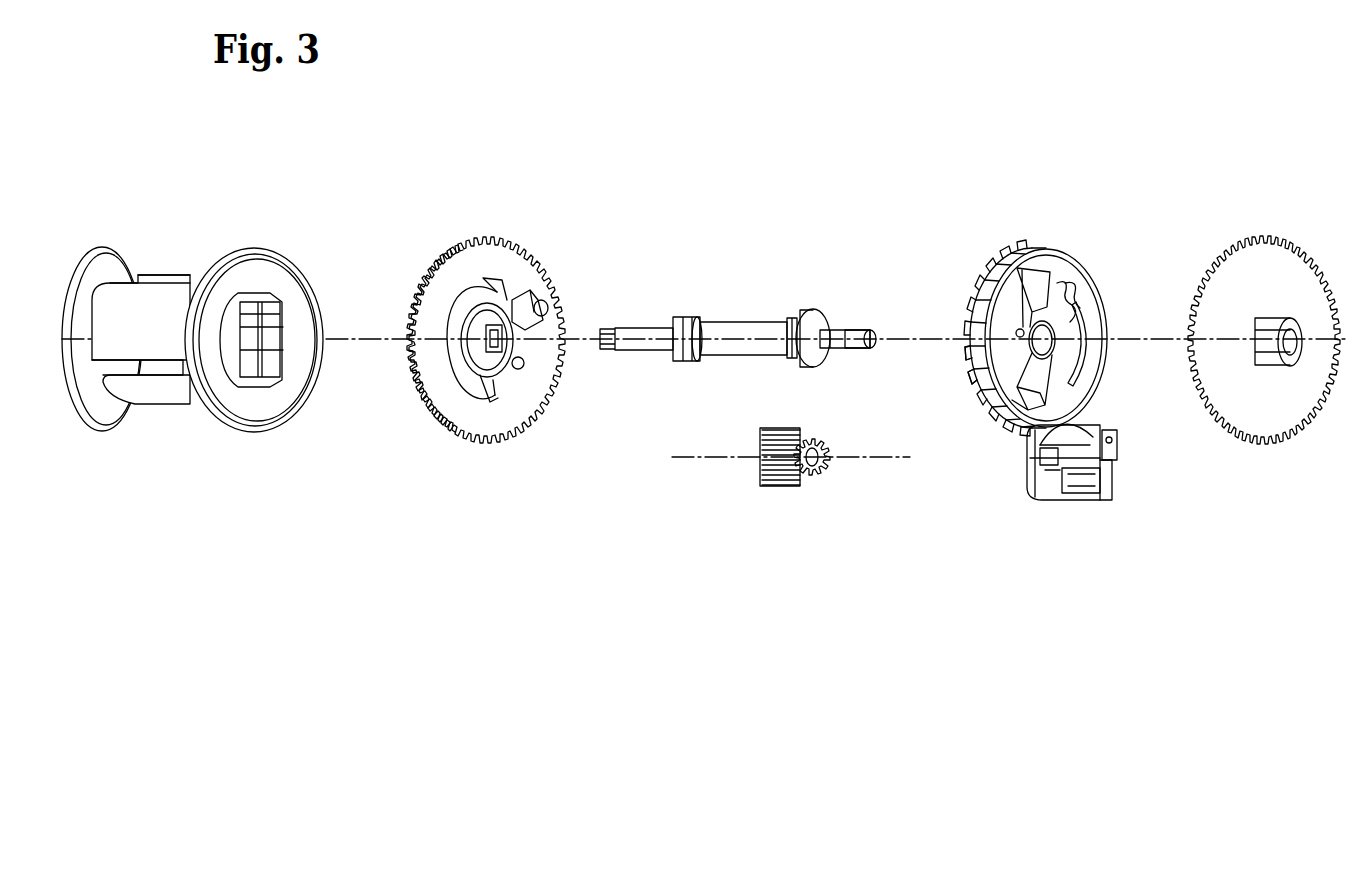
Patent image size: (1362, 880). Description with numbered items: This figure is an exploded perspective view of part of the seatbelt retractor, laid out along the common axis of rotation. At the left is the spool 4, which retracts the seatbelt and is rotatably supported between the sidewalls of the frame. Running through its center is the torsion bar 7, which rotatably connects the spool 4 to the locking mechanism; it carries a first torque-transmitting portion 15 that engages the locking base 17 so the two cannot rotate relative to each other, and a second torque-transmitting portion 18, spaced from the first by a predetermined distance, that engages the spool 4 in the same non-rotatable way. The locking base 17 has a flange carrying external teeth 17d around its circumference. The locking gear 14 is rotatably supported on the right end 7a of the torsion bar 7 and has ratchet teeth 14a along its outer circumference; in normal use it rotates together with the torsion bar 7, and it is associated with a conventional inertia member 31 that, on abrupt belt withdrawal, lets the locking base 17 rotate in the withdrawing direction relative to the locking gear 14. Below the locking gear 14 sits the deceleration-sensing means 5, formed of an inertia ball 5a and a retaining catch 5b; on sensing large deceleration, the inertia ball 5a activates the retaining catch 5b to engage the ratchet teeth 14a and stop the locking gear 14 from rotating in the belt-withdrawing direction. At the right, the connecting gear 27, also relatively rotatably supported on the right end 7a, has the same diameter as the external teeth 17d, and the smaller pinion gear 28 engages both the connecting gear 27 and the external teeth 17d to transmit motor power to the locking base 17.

The spool 4 is at (182, 293).
The locking base 17 is at (446, 416).
The external teeth 17d is at (458, 247).
The torsion bar 7 is at (744, 313).
The right end 7a is at (848, 337).
The first torque-transmitting portion 15 is at (790, 322).
The second torque-transmitting portion 18 is at (681, 360).
The pinion gear 28 is at (792, 488).
The locking gear 14 is at (1017, 243).
The ratchet teeth 14a is at (978, 370).
The inertia member 31 is at (1003, 330).
The deceleration-sensing means 5 is at (1074, 500).
The inertia ball 5a is at (1083, 460).
The retaining catch 5b is at (1035, 463).
The connecting gear 27 is at (1275, 420).